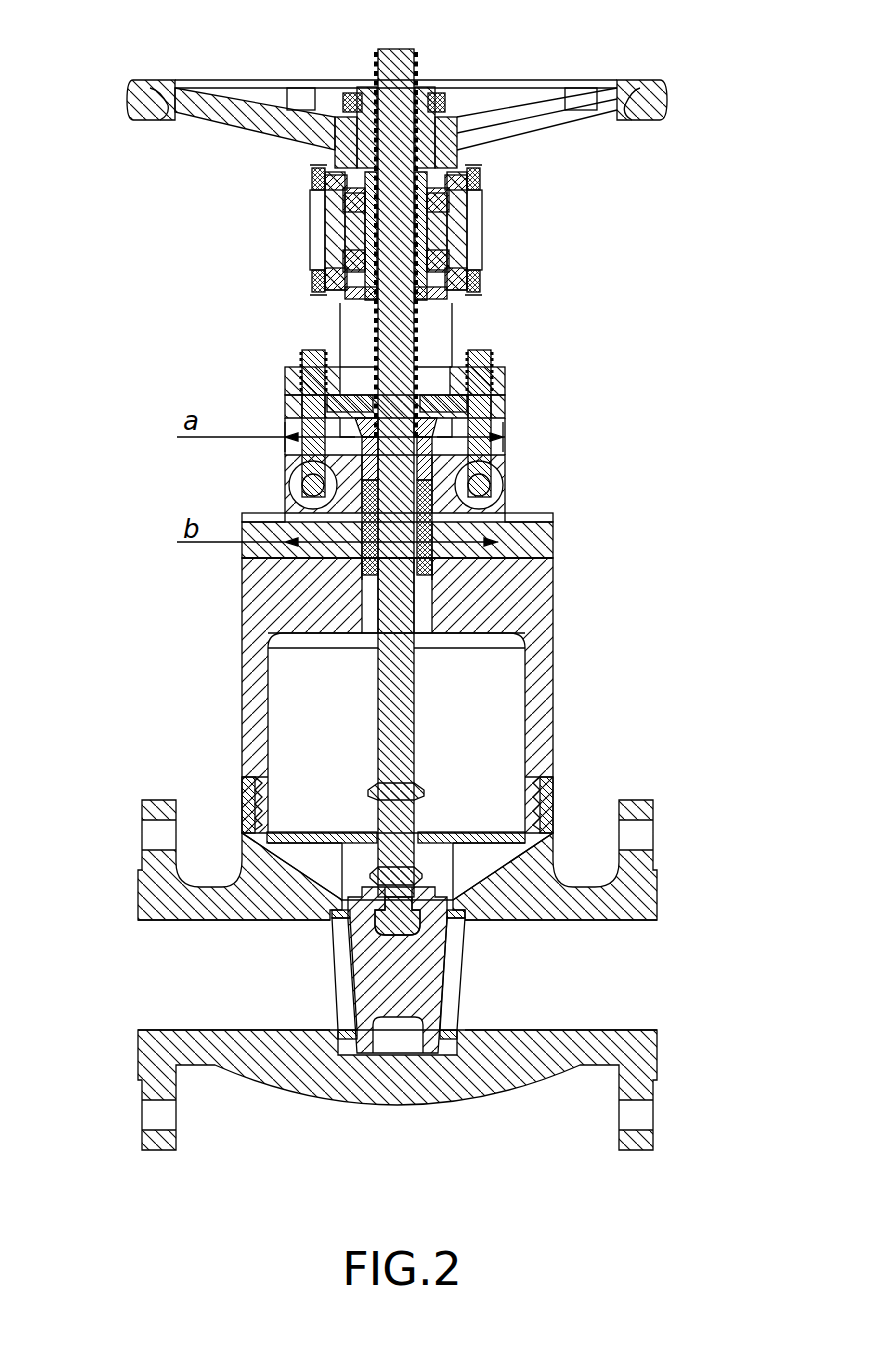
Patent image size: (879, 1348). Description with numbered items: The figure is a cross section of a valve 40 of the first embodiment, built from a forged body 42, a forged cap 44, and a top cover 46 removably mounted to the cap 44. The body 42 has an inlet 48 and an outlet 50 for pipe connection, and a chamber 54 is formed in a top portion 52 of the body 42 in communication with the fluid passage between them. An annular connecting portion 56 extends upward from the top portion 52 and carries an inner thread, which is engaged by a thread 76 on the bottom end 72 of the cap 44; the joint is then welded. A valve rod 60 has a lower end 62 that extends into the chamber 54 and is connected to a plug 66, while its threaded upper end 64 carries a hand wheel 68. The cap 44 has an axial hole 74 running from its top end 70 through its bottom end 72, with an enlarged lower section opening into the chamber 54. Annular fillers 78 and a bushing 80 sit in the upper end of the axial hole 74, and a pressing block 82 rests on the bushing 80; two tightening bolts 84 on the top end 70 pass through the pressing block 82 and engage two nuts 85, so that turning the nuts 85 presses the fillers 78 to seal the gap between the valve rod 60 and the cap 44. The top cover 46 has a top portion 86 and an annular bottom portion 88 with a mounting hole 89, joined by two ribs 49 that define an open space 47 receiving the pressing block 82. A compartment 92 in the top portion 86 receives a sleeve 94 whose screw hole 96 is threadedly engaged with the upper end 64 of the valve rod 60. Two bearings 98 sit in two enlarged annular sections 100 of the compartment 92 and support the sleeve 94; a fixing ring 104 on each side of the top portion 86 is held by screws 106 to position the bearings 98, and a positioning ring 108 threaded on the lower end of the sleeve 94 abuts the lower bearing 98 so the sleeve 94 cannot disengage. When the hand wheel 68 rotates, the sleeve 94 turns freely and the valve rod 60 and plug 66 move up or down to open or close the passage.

The valve 40 is at (158, 596).
The body 42 is at (350, 1078).
The cap 44 is at (552, 677).
The top cover 46 is at (436, 318).
The open space 47 is at (332, 340).
The inlet 48 is at (158, 955).
The ribs 49 is at (366, 318).
The outlet 50 is at (640, 955).
The top portion 52 is at (545, 862).
The chamber 54 is at (530, 900).
The connecting portion 56 is at (543, 796).
The valve rod 60 is at (425, 611).
The lower end 62 is at (528, 836).
The upper end 64 is at (401, 76).
The plug 66 is at (412, 992).
The hand wheel 68 is at (631, 88).
The top end 70 is at (455, 520).
The bottom end 72 is at (530, 790).
The axial hole 74 is at (425, 597).
The thread 76 is at (526, 800).
The fillers 78 is at (498, 545).
The bushing 80 is at (433, 446).
The pressing block 82 is at (505, 405).
The tightening bolts 84 is at (500, 430).
The nuts 85 is at (500, 380).
The top portion 86 is at (312, 222).
The bottom portion 88 is at (262, 532).
The mounting hole 89 is at (264, 520).
The compartment 92 is at (437, 233).
The sleeve 94 is at (430, 130).
The screw hole 96 is at (371, 122).
The bearings 98 is at (448, 202).
The enlarged annular sections 100 is at (478, 198).
The fixing ring 104 is at (480, 185).
The screws 106 is at (313, 183).
The positioning ring 108 is at (446, 300).